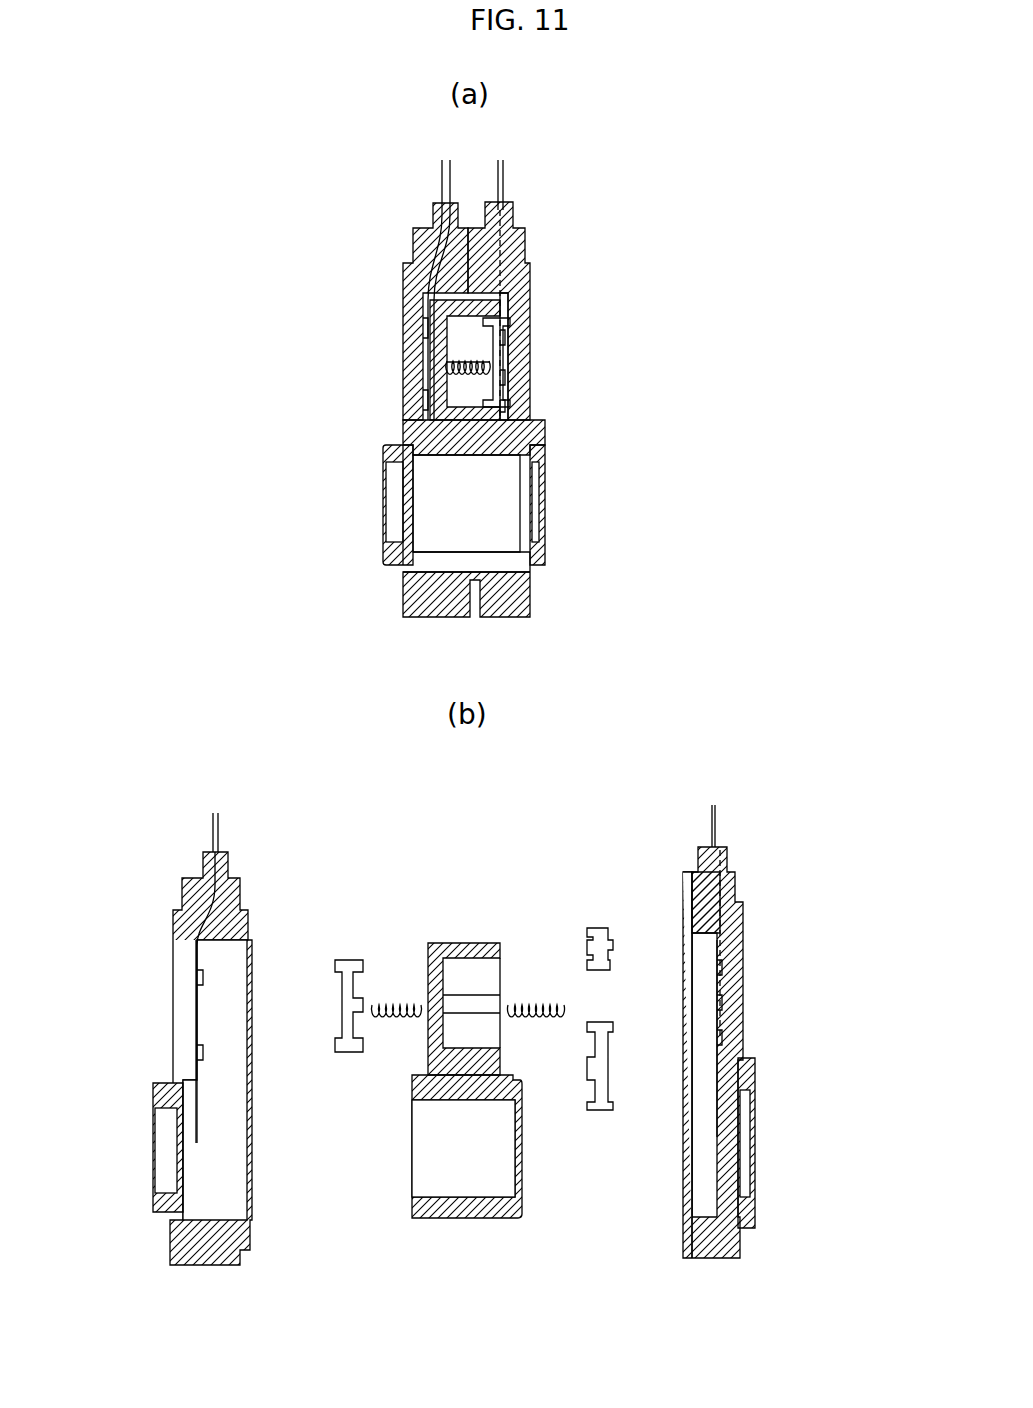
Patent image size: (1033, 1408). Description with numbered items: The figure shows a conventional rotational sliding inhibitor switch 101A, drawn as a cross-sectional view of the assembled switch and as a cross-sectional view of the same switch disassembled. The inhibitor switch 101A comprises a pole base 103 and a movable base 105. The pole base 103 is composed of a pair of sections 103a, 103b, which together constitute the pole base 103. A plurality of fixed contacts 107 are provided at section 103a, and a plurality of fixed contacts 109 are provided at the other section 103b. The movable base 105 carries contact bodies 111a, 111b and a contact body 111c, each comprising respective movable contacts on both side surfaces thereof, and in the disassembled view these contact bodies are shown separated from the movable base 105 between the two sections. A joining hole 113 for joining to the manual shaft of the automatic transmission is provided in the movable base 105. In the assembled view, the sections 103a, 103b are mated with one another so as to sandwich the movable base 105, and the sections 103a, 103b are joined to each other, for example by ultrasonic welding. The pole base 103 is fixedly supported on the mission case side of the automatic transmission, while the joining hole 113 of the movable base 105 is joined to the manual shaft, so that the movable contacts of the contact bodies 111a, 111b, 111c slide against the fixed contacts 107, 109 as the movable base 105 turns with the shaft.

The inhibitor switch 101A is at (590, 176).
The pole base 103 is at (531, 238).
The section 103a is at (531, 286).
The section 103b is at (412, 246).
The movable base 105 is at (520, 428).
The fixed contacts 107 is at (530, 363).
The fixed contacts 109 is at (405, 328).
The contact body 111a is at (497, 331).
The contact body 111b is at (590, 925).
The contact body 111c is at (345, 957).
The joining hole 113 is at (503, 506).